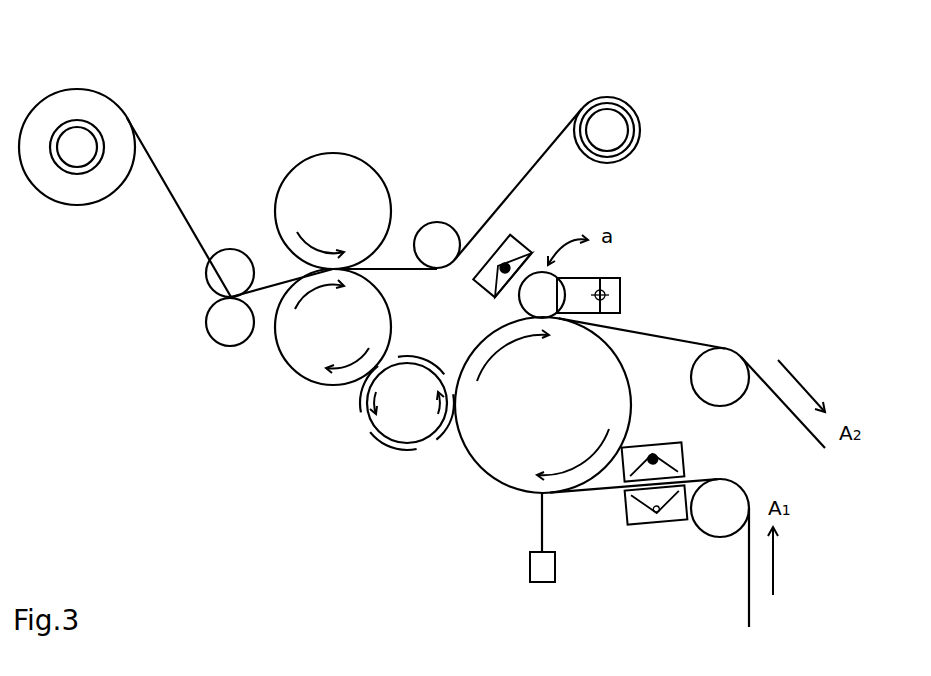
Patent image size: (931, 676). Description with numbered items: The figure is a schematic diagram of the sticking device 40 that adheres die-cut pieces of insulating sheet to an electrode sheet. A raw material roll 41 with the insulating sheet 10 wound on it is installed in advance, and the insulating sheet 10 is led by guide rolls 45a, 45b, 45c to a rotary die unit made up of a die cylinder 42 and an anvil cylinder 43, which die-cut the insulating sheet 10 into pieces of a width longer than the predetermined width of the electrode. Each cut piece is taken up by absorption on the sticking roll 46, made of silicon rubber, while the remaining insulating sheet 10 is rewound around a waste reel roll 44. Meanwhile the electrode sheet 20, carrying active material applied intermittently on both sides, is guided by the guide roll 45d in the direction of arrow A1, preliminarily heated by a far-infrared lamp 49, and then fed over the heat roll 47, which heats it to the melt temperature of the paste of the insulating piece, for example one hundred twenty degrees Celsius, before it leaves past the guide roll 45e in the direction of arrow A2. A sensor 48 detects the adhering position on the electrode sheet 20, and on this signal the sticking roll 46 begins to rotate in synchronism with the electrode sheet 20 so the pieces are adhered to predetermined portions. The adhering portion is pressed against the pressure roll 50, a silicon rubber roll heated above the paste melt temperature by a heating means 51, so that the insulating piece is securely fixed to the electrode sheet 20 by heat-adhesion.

The insulating sheet 10 is at (170, 197).
The electrode sheet 20 is at (662, 332).
The sticking device 40 is at (346, 97).
The raw material roll 41 is at (101, 110).
The die cylinder 42 is at (375, 165).
The anvil cylinder 43 is at (286, 362).
The waste reel roll 44 is at (641, 136).
The guide roll 45a is at (228, 252).
The guide roll 45b is at (205, 321).
The guide roll 45c is at (446, 222).
The guide roll 45d is at (712, 537).
The guide roll 45e is at (724, 406).
The sticking roll 46 is at (363, 418).
The heat roll 47 is at (476, 469).
The sensor 48 is at (530, 578).
The far-infrared lamp 49 is at (627, 515).
The pressure roll 50 is at (567, 290).
The heating means 51 is at (520, 240).